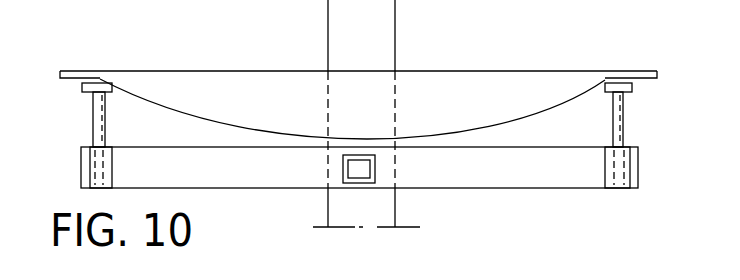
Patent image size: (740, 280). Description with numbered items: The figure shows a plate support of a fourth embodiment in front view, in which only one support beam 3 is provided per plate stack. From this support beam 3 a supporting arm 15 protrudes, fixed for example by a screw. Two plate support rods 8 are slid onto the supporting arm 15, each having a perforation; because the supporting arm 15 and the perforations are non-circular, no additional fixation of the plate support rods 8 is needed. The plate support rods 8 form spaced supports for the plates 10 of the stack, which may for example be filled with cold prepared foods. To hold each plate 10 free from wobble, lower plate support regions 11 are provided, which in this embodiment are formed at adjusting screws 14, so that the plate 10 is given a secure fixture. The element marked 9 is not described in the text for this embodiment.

The support beam 3 is at (350, 198).
The plate support rod 8 is at (422, 170).
The center column 9 is at (381, 128).
The plate 10 is at (247, 97).
The lower plate support region 11 is at (76, 70).
The adjusting screw 14 is at (103, 80).
The supporting arm 15 is at (358, 168).